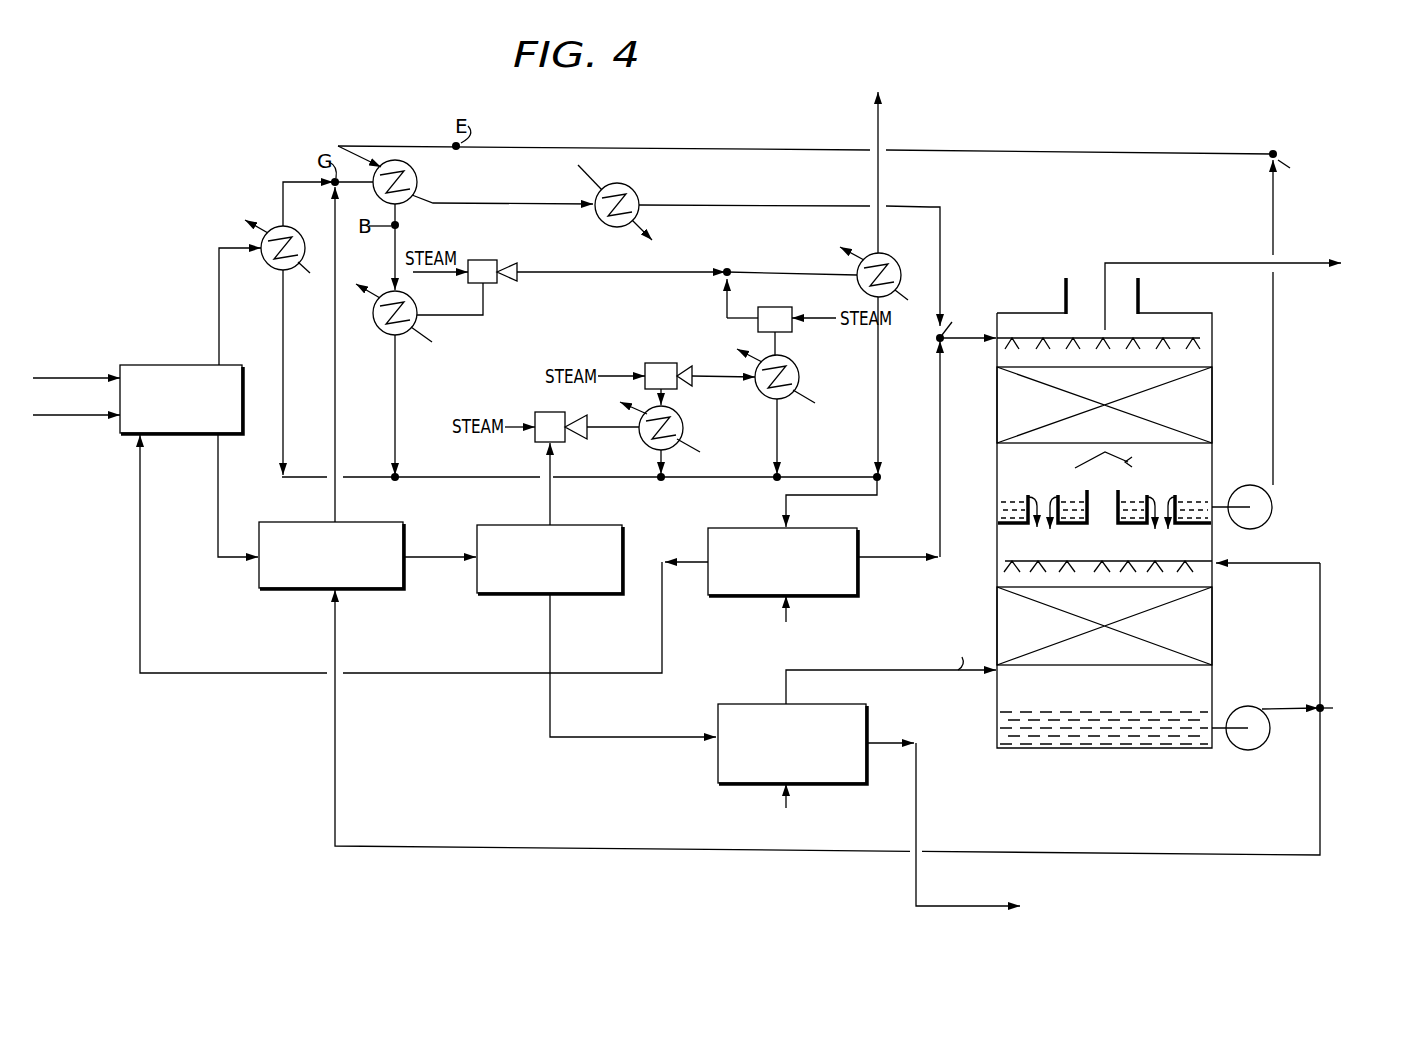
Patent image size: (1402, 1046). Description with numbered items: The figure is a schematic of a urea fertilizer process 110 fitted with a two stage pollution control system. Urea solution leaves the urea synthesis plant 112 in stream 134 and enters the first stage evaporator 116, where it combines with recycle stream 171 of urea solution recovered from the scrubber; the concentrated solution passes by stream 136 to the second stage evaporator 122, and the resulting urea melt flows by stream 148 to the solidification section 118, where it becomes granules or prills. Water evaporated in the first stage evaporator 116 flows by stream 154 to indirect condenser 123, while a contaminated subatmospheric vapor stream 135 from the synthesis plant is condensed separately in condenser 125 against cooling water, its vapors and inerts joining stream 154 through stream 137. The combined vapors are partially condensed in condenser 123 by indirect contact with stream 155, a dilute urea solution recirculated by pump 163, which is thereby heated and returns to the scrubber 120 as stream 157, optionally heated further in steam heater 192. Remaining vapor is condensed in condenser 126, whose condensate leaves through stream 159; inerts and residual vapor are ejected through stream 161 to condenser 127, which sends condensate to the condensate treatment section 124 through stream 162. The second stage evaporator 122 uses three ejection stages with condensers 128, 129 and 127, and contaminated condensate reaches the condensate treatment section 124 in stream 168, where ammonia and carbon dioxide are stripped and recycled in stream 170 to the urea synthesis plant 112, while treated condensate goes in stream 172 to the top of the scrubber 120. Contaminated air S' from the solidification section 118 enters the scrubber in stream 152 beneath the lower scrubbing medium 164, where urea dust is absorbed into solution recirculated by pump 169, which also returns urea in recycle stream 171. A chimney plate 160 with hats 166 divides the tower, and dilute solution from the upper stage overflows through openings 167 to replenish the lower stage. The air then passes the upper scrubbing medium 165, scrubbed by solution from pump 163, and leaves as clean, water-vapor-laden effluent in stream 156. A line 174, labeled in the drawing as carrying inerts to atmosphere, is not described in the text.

The urea fertilizer process 110 is at (139, 331).
The urea synthesis plant 112 is at (203, 365).
The first stage evaporator 116 is at (292, 522).
The solidification section 118 is at (866, 728).
The pollution control scrubber 120 is at (1212, 643).
The second stage evaporator 122 is at (515, 593).
The indirect condenser 123 is at (418, 182).
The condensate treatment section 124 is at (857, 540).
The condenser 125 is at (281, 226).
The condenser 126 is at (386, 293).
The condenser 127 is at (895, 258).
The condenser 128 is at (695, 411).
The condenser 129 is at (797, 363).
The stream 134 is at (218, 498).
The stream 135 is at (219, 300).
The stream 136 is at (445, 557).
The stream 137 is at (296, 181).
The stream 148 is at (551, 646).
The stream 152 is at (915, 655).
The stream 154 is at (335, 395).
The stream 155 is at (1047, 152).
The stream 156 is at (1196, 263).
The stream 157 is at (942, 262).
The stream 159 is at (397, 392).
The chimney plate 160 is at (1110, 557).
The stream 161 is at (628, 273).
The stream 162 is at (880, 420).
The pump 163 is at (1272, 513).
The scrubbing medium 164 is at (1113, 656).
The scrubbing medium 165 is at (1115, 436).
The hats 166 is at (1117, 461).
The openings 167 is at (1104, 523).
The stream 168 is at (786, 497).
The pump 169 is at (1262, 746).
The stream 170 is at (437, 673).
The recycle stream 171 is at (587, 847).
The stream 172 is at (940, 467).
The inerts vent line 174 is at (884, 133).
The steam heater 192 is at (639, 185).